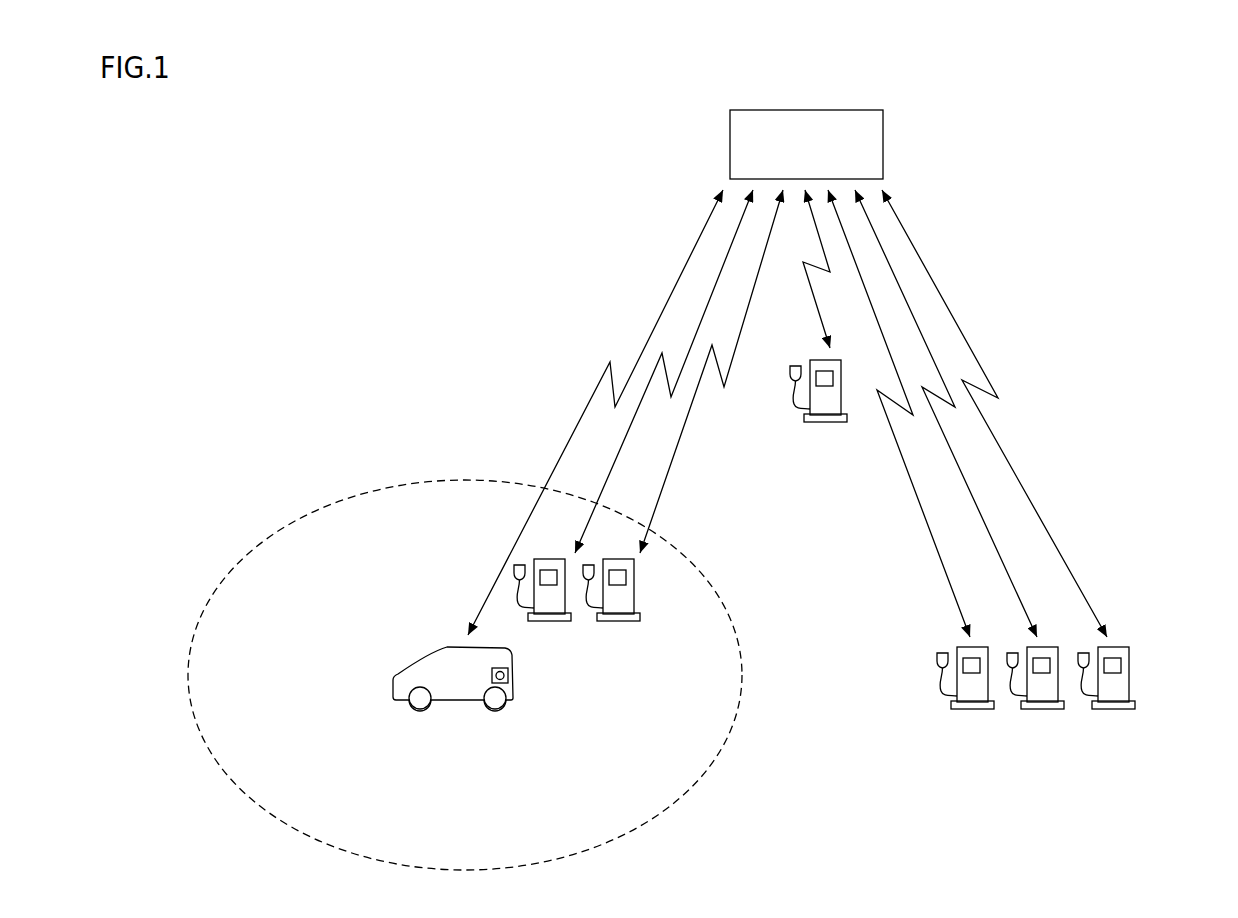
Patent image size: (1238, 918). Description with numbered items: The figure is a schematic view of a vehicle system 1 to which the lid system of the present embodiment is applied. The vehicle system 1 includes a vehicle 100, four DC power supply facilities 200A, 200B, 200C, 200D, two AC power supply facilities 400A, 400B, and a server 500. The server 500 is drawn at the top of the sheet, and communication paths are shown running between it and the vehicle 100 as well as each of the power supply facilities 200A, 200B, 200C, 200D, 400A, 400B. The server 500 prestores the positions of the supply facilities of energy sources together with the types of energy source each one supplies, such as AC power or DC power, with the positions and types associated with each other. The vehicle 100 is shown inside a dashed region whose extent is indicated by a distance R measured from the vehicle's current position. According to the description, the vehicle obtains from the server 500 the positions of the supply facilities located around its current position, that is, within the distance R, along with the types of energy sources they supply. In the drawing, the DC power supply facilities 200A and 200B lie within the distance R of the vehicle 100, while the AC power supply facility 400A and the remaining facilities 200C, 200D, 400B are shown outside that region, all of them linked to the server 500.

The vehicle system 1 is at (464, 239).
The vehicle 100 is at (463, 701).
The DC power supply facility 200A is at (550, 622).
The DC power supply facility 200B is at (619, 622).
The DC power supply facility 200C is at (975, 710).
The DC power supply facility 200D is at (1045, 710).
The AC power supply facility 400A is at (828, 423).
The AC power supply facility 400B is at (1116, 710).
The server 500 is at (832, 110).
The distance R is at (290, 524).